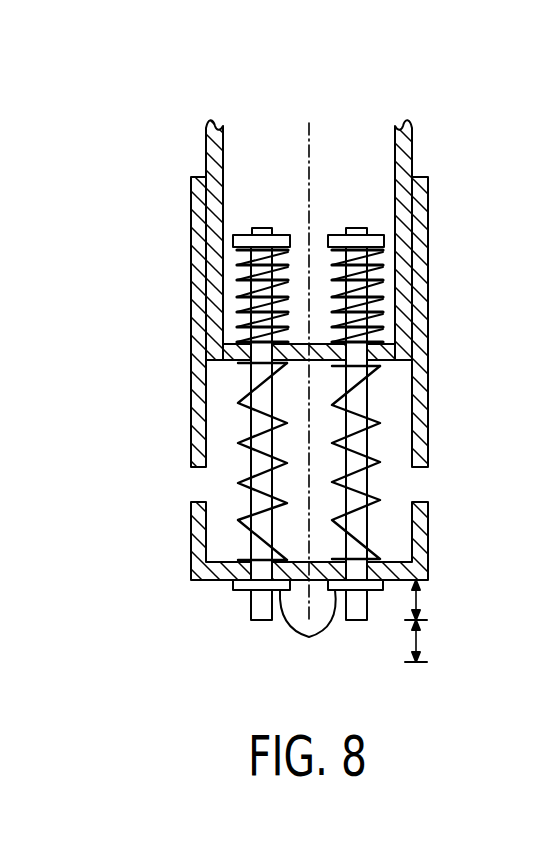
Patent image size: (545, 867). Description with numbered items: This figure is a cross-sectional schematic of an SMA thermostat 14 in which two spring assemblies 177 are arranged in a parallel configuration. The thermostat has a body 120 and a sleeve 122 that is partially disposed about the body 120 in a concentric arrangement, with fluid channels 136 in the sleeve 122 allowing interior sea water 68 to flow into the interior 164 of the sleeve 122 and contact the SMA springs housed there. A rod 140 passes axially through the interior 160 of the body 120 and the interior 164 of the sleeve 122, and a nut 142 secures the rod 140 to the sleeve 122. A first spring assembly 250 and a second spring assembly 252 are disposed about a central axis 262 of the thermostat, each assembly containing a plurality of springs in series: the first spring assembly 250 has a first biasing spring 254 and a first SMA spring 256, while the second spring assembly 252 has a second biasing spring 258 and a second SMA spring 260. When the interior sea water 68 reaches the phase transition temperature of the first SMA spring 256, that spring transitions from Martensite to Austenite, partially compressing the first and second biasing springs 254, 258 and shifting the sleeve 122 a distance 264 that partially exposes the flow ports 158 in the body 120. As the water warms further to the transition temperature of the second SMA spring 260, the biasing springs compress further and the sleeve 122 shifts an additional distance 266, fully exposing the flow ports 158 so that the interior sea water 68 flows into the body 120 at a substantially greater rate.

The SMA thermostat 14 is at (217, 95).
The interior sea water 68 is at (528, 320).
The body 120 is at (403, 167).
The sleeve 122 is at (416, 432).
The fluid channels 136 is at (190, 482).
The rod 140 is at (258, 608).
The nut 142 is at (308, 630).
The flow ports 158 is at (216, 242).
The interior 160 is at (300, 195).
The interior 164 is at (230, 541).
The spring assemblies 177 is at (389, 442).
The first spring assembly 250 is at (231, 438).
The second spring assembly 252 is at (380, 405).
The first biasing spring 254 is at (243, 297).
The first SMA spring 256 is at (241, 402).
The second biasing spring 258 is at (382, 310).
The second SMA spring 260 is at (380, 423).
The central axis 262 is at (308, 138).
The distance 264 is at (419, 603).
The additional distance 266 is at (419, 640).